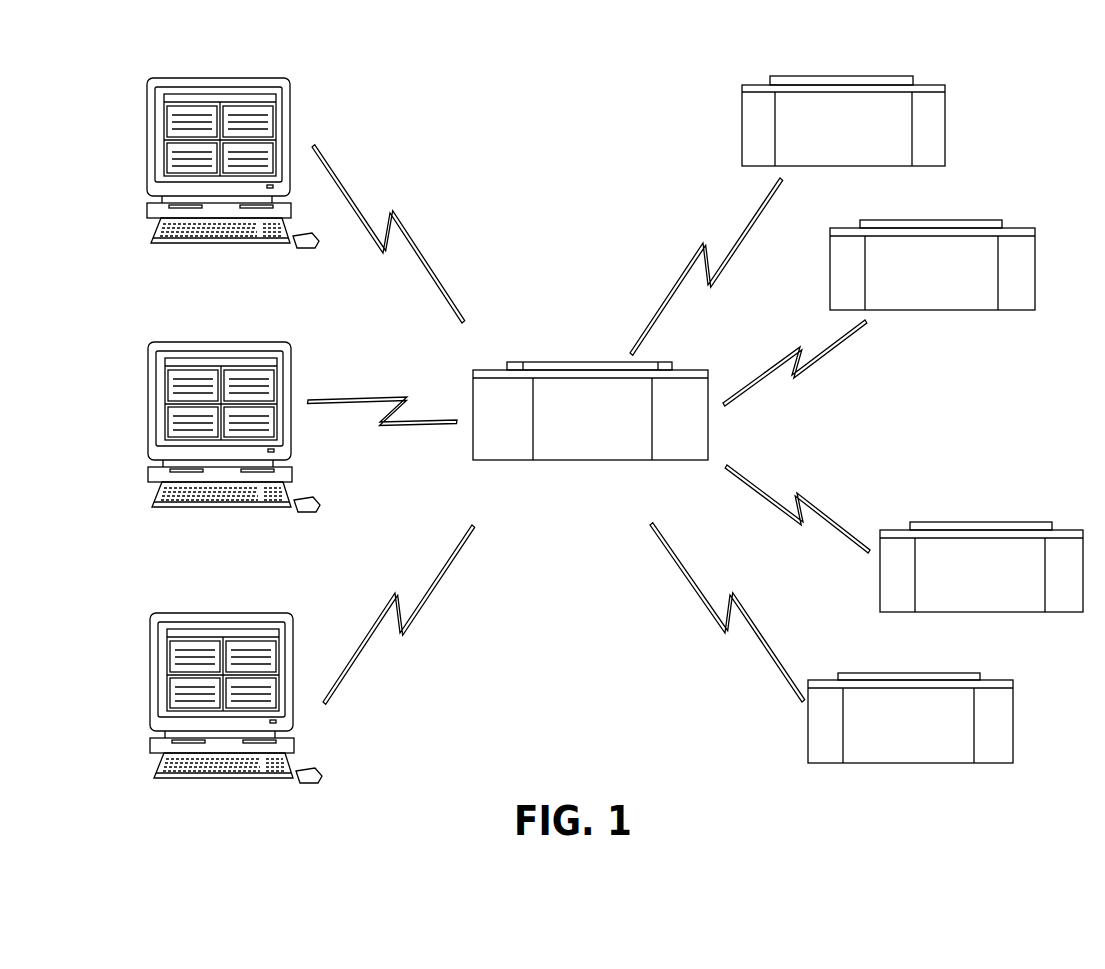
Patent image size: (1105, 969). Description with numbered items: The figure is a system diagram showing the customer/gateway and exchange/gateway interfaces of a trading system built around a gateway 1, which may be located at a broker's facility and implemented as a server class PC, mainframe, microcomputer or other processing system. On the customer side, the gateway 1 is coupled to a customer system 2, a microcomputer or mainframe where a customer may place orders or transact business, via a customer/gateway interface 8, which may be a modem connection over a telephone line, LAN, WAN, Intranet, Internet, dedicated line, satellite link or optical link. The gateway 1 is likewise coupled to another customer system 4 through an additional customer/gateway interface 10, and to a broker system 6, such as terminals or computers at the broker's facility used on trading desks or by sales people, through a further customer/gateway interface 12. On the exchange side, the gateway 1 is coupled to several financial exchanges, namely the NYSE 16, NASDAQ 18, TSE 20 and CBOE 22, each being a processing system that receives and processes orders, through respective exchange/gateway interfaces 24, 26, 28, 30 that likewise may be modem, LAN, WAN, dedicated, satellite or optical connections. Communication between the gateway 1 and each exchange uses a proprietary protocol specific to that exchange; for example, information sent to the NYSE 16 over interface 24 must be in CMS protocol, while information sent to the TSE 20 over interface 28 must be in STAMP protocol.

The gateway 1 is at (568, 362).
The customer system 2 is at (292, 112).
The customer system 4 is at (290, 350).
The broker system 6 is at (293, 617).
The customer/gateway interface 8 is at (365, 215).
The customer/gateway interface 10 is at (360, 403).
The customer/gateway interface 12 is at (378, 630).
The NYSE 16 is at (740, 122).
The NASDAQ 18 is at (830, 263).
The TSE 20 is at (880, 570).
The CBOE 22 is at (808, 737).
The exchange/gateway interface 24 is at (728, 240).
The exchange/gateway interface 26 is at (757, 385).
The exchange/gateway interface 28 is at (810, 503).
The exchange/gateway interface 30 is at (710, 618).